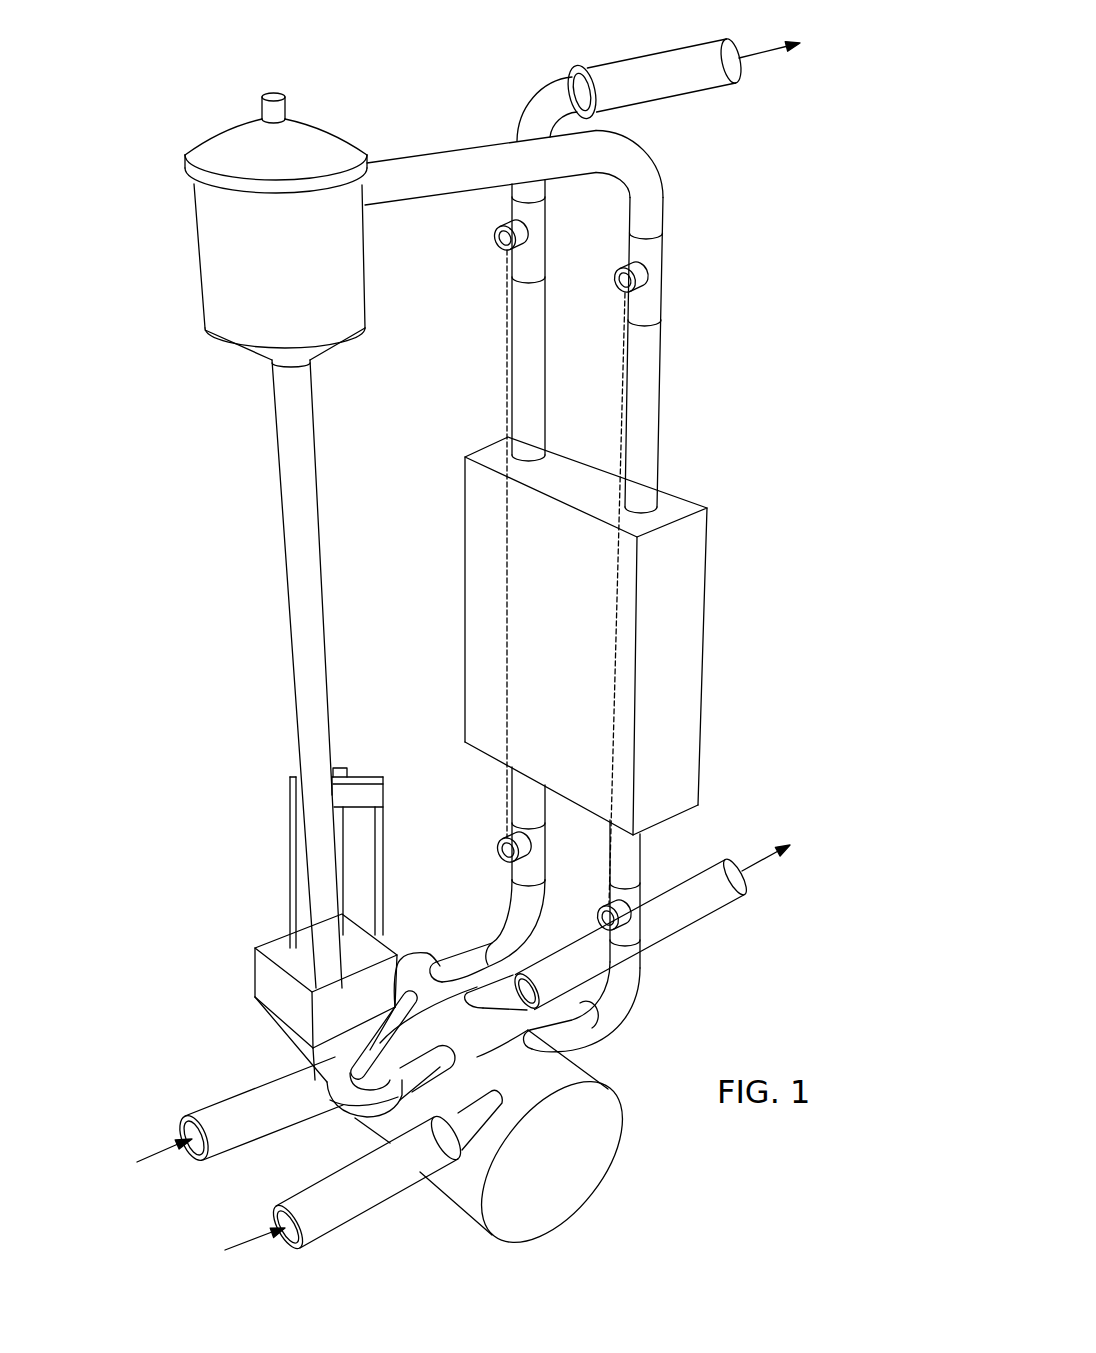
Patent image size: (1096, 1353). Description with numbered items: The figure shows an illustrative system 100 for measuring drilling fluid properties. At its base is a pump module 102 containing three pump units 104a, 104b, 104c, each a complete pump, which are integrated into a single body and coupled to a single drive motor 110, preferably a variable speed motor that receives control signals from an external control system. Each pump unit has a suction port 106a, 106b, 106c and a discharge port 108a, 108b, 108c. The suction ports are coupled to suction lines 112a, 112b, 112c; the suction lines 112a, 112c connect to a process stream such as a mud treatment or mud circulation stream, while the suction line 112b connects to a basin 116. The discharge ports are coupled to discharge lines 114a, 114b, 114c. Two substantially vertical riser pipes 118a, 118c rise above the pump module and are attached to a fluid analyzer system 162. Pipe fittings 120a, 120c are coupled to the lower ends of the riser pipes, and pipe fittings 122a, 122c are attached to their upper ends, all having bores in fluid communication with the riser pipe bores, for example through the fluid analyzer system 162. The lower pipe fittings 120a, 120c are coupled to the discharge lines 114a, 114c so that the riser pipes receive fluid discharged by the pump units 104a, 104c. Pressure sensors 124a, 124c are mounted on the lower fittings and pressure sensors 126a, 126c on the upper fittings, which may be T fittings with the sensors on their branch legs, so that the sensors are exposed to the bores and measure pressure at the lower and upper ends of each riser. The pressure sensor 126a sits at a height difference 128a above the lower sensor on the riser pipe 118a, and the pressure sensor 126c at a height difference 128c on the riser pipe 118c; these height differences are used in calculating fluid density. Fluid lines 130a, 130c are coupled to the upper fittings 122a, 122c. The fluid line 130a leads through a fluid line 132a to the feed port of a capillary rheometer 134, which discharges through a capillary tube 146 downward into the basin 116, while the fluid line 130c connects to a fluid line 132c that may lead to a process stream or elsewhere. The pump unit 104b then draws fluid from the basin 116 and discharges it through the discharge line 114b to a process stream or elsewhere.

The system 100 is at (383, 102).
The pump module 102 is at (580, 1198).
The pump unit 104a is at (453, 1190).
The pump unit 104b is at (370, 1125).
The pump unit 104c is at (410, 958).
The suction port 106a is at (473, 1122).
The suction port 106b is at (430, 1066).
The suction port 106c is at (398, 1017).
The discharge port 108a is at (570, 1040).
The discharge port 108b is at (490, 1003).
The discharge port 108c is at (460, 958).
The drive motor 110 is at (370, 775).
The suction line 112a is at (363, 1202).
The suction line 112b is at (333, 1100).
The suction line 112c is at (205, 1113).
The discharge line 114a is at (623, 992).
The discharge line 114b is at (673, 918).
The discharge line 114c is at (513, 910).
The basin 116 is at (263, 980).
The riser pipe 118a is at (650, 418).
The riser pipe 118c is at (525, 385).
The pipe fitting 120a is at (634, 897).
The pipe fitting 120c is at (538, 832).
The pipe fitting 122a is at (658, 290).
The pipe fitting 122c is at (538, 250).
The pressure sensor 124a is at (625, 922).
The pressure sensor 124c is at (497, 848).
The pressure sensor 126a is at (618, 290).
The pressure sensor 126c is at (498, 245).
The height difference 128a is at (617, 620).
The height difference 128c is at (503, 553).
The fluid line 130a is at (655, 178).
The fluid line 130c is at (555, 100).
The fluid line 132a is at (452, 160).
The fluid line 132c is at (697, 83).
The capillary rheometer 134 is at (222, 142).
The capillary tube 146 is at (297, 612).
The fluid analyzer system 162 is at (685, 680).